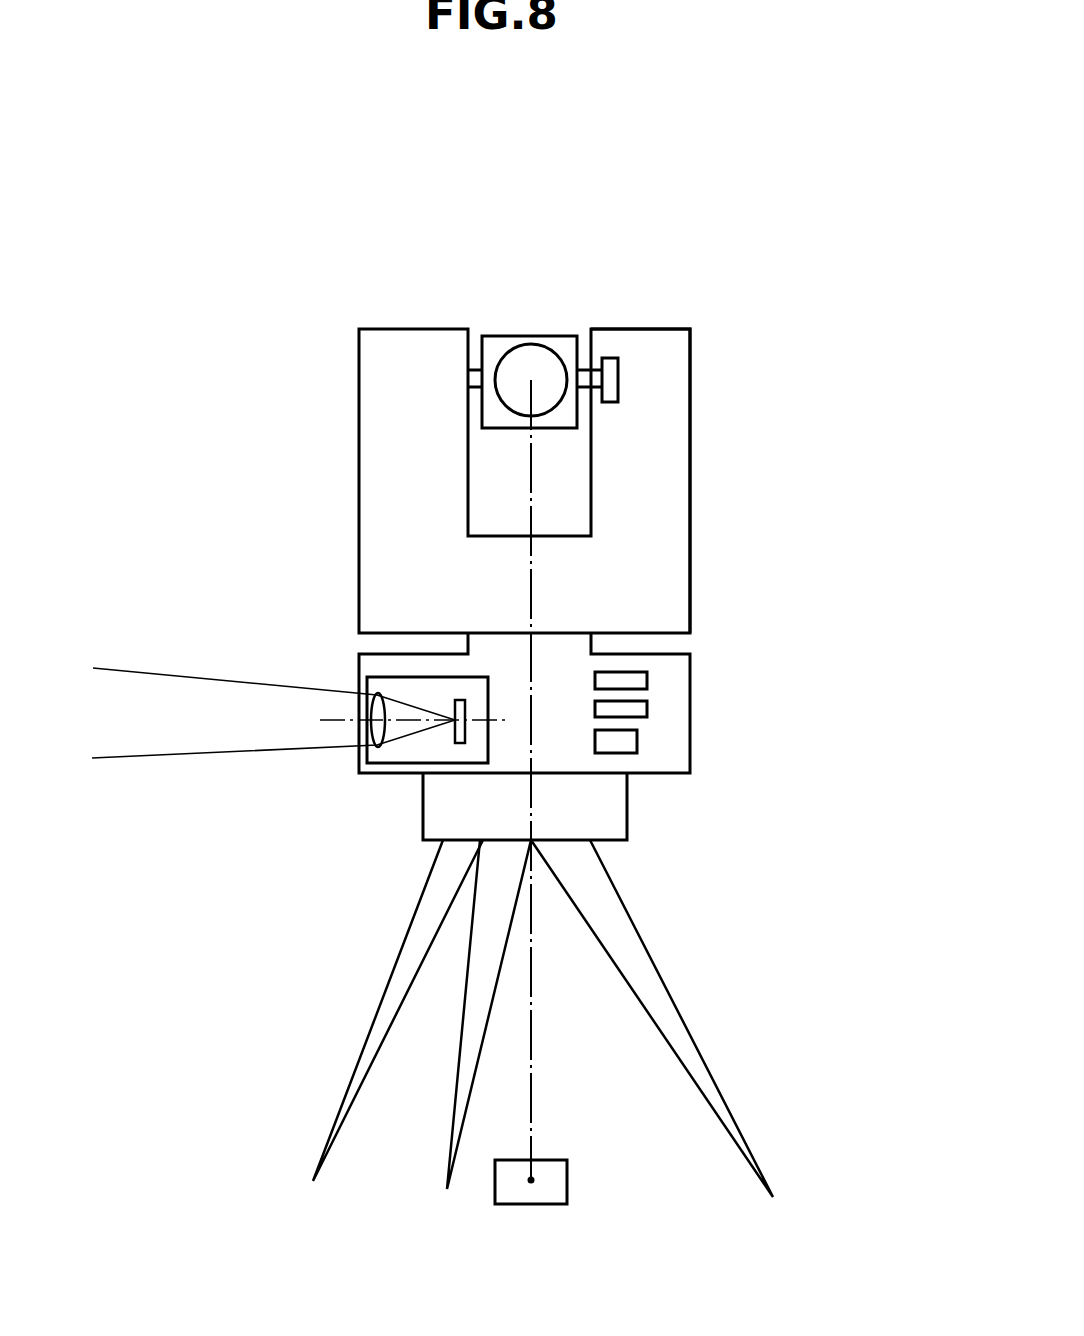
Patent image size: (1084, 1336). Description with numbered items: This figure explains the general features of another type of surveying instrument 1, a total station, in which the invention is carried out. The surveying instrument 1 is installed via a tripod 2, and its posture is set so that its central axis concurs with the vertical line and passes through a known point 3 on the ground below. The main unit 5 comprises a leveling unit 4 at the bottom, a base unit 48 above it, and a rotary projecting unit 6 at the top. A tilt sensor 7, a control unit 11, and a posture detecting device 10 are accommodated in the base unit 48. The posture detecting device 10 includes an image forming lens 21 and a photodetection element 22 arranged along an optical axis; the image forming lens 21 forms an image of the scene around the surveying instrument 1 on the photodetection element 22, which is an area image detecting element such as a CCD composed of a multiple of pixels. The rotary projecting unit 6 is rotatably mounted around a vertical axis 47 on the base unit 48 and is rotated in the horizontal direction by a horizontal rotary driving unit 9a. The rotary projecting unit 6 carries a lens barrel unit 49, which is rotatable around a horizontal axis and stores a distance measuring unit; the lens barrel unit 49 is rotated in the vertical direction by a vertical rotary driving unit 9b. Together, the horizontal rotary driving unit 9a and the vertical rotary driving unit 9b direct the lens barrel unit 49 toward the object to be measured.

The surveying instrument 1 is at (405, 196).
The tripod 2 is at (362, 1043).
The known point 3 is at (533, 1182).
The leveling unit 4 is at (628, 828).
The main unit 5 is at (752, 782).
The rotary projecting unit 6 is at (657, 329).
The tilt sensor 7 is at (647, 710).
The horizontal rotary driving unit 9a is at (647, 681).
The vertical rotary driving unit 9b is at (618, 379).
The posture detecting device 10 is at (422, 674).
The control unit 11 is at (637, 741).
The image forming lens 21 is at (378, 765).
The photodetection element 22 is at (460, 745).
The vertical axis 47 is at (531, 1012).
The base unit 48 is at (690, 760).
The lens barrel unit 49 is at (525, 336).